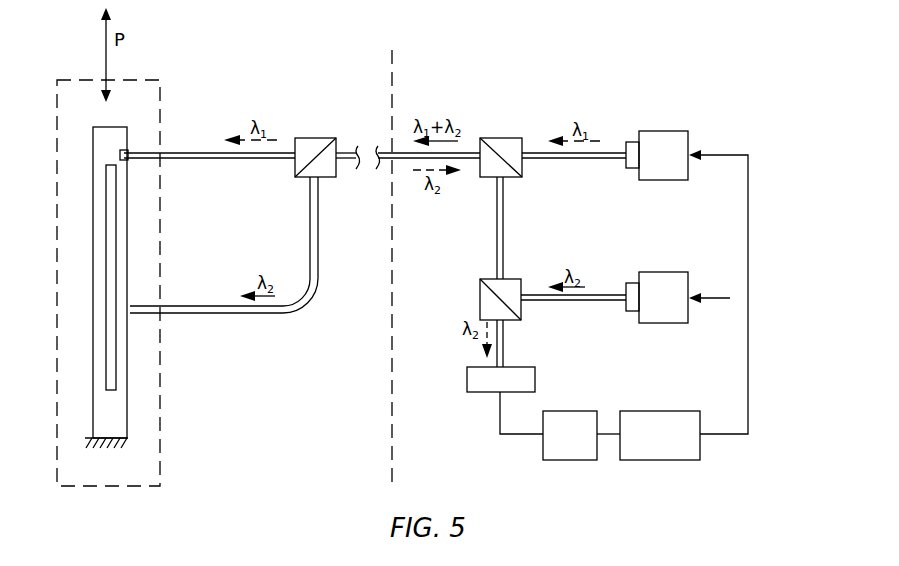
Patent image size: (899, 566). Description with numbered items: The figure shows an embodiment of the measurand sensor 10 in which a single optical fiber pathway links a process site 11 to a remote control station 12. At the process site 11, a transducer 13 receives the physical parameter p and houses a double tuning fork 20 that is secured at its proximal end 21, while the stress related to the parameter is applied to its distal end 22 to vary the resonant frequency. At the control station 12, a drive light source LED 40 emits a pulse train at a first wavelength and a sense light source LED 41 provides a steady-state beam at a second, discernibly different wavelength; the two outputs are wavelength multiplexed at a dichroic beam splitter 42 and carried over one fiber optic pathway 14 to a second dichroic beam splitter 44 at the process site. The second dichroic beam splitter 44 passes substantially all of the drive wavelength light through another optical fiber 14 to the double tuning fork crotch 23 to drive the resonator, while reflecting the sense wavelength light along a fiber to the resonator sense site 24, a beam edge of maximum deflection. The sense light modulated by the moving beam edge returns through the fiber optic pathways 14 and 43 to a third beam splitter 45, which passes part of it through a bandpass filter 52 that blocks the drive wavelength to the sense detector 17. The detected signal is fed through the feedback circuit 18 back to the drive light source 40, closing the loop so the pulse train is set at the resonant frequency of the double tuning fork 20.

The measurand sensor 10 is at (450, 58).
The process site 11 is at (294, 436).
The control station 12 is at (452, 436).
The transducer 13 is at (160, 480).
The fiber optic pathway 14 is at (200, 152).
The sense detector 17 is at (575, 411).
The feedback circuit 18 is at (665, 411).
The double tuning fork 20 is at (93, 309).
The proximal end 21 is at (78, 432).
The distal end 22 is at (147, 124).
The double tuning fork crotch 23 is at (103, 148).
The resonator sense site 24 is at (147, 288).
The drive light source lambda 1 LED 40 is at (672, 131).
The sense light source lambda 2 LED 41 is at (672, 272).
The dichroic beam splitter 42 is at (500, 138).
The fiber optic pathway 43 is at (460, 154).
The second dichroic beam splitter 44 is at (318, 138).
The third beam splitter 45 is at (480, 300).
The lambda 2 bandpass filter 52 is at (467, 373).